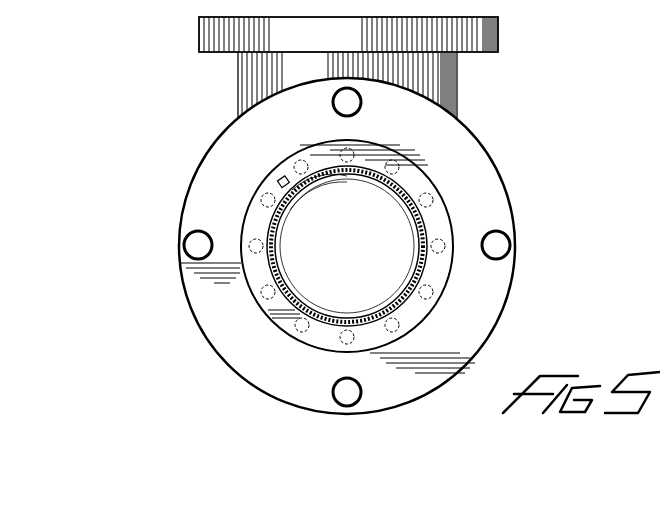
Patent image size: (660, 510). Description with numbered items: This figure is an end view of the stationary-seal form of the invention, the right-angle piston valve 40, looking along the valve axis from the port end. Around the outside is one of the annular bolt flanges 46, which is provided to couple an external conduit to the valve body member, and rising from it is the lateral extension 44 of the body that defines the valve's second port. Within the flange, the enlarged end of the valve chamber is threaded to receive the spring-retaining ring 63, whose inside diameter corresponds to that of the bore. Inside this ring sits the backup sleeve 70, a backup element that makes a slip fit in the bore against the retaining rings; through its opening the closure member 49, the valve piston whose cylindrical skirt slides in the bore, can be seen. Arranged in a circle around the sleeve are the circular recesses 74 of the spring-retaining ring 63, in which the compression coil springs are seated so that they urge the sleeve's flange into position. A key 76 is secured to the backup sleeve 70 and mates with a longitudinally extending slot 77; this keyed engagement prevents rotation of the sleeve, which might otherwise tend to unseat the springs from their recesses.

The piston valve 40 is at (178, 148).
The lateral extension 44 is at (457, 78).
The annular bolt flanges 46 is at (498, 34).
The closure member 49 is at (385, 261).
The spring-retaining ring 63 is at (422, 316).
The backup sleeve 70 is at (395, 308).
The circular recesses 74 is at (430, 193).
The key 76 is at (292, 192).
The longitudinally extending slot 77 is at (285, 178).